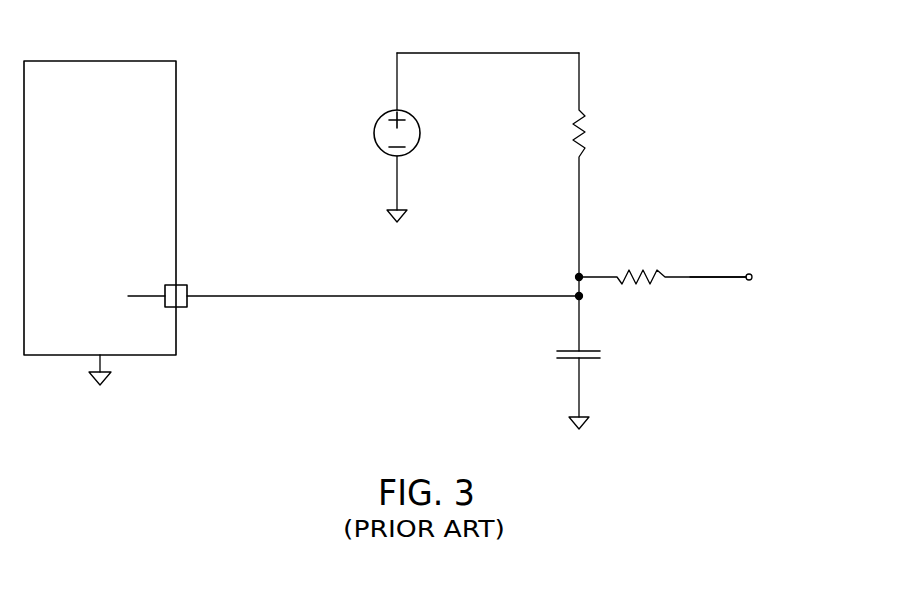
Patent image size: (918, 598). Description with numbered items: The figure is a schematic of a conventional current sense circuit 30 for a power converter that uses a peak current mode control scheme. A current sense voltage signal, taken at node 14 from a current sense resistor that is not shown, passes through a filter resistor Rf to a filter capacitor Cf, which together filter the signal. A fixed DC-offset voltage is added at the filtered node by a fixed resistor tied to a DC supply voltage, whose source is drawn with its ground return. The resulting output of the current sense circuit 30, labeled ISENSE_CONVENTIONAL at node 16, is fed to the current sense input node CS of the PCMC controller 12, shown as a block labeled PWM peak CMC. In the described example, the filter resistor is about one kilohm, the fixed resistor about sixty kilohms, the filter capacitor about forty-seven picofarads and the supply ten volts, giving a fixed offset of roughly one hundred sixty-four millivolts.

The conventional current sense circuit 30 is at (775, 43).
The PCMC controller 12 is at (100, 61).
The node 16 is at (577, 276).
The node 14 is at (707, 277).